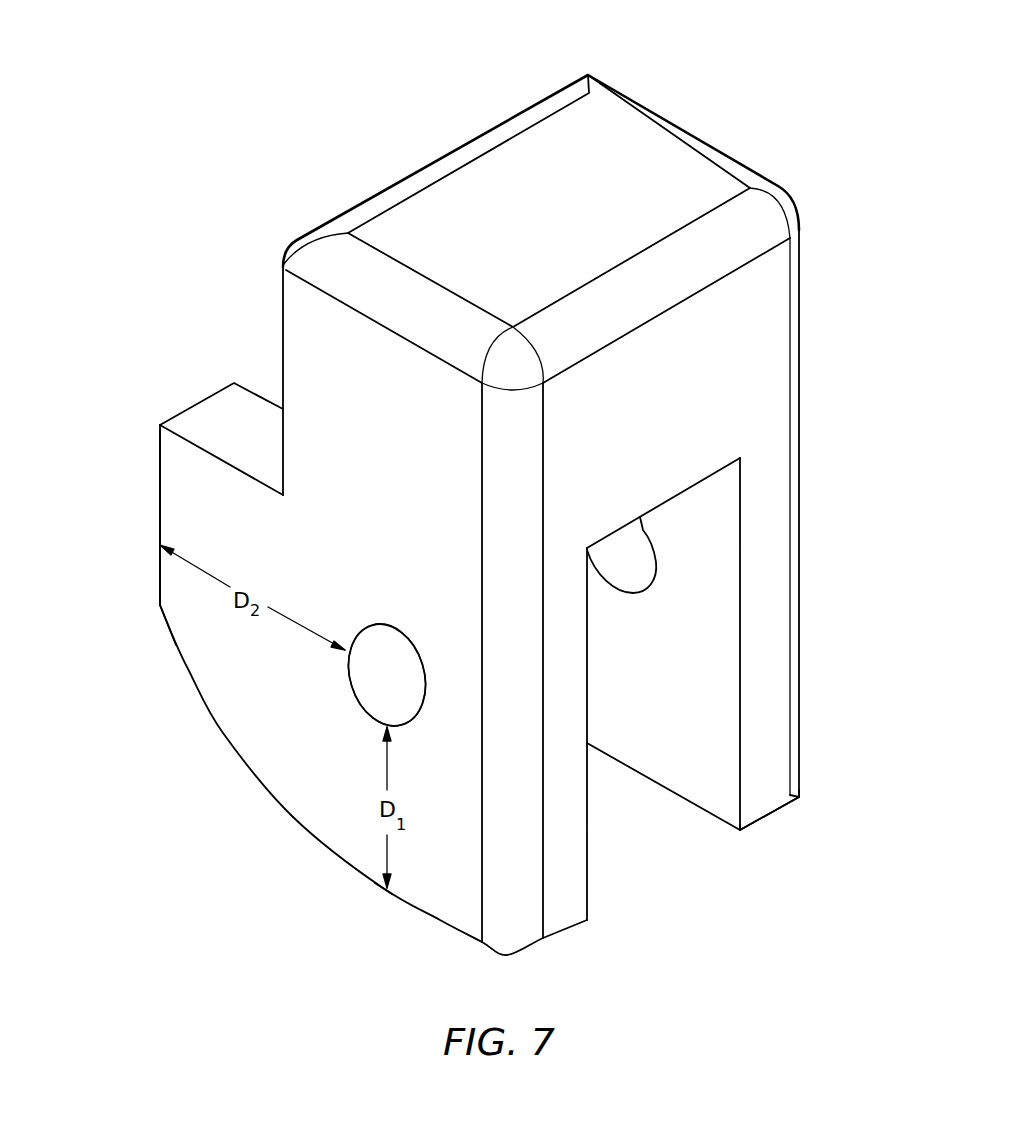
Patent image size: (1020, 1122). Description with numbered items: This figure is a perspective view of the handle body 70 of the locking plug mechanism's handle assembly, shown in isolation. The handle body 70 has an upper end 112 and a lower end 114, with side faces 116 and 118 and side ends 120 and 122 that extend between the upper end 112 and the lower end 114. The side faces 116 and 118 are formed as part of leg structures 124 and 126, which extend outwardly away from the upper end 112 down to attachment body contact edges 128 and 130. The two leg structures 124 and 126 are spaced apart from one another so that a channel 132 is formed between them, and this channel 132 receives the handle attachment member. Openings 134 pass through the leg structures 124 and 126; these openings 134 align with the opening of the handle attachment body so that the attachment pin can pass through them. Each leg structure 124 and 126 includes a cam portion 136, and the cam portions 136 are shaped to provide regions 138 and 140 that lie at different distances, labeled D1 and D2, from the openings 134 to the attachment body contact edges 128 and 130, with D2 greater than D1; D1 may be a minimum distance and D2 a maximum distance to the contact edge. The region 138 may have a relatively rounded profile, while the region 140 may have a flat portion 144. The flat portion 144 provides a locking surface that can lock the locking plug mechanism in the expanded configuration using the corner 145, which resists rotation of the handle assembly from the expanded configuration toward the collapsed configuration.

The handle body 70 is at (117, 273).
The upper end 112 is at (685, 110).
The lower end 114 is at (222, 833).
The side face 116 is at (288, 613).
The side face 118 is at (837, 332).
The side end 120 is at (275, 233).
The side end 122 is at (822, 737).
The leg structure 124 is at (443, 890).
The leg structure 126 is at (802, 783).
The attachment body contact edge 128 is at (380, 892).
The attachment body contact edge 130 is at (703, 813).
The channel 132 is at (632, 877).
The openings 134 is at (377, 645).
The cam portion 136 is at (210, 733).
The region 138 is at (283, 877).
The region 140 is at (125, 558).
The flat portion 144 is at (145, 498).
The corner 145 is at (158, 605).